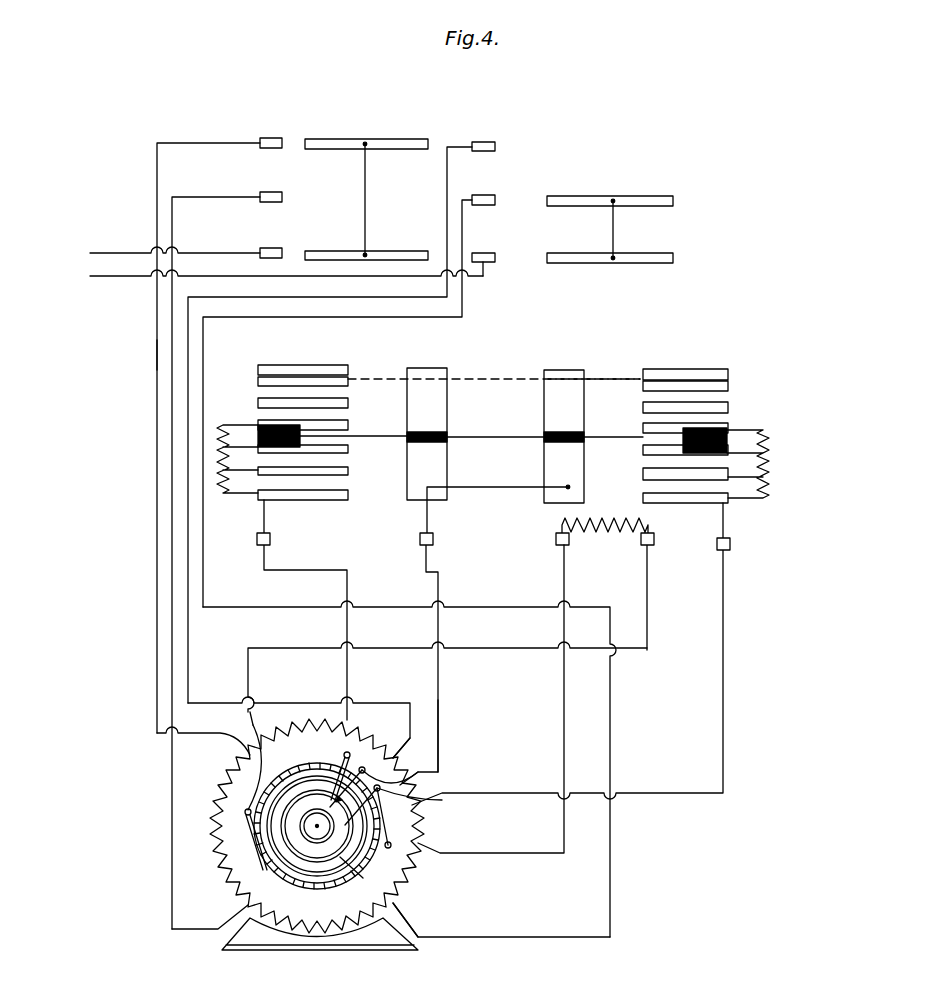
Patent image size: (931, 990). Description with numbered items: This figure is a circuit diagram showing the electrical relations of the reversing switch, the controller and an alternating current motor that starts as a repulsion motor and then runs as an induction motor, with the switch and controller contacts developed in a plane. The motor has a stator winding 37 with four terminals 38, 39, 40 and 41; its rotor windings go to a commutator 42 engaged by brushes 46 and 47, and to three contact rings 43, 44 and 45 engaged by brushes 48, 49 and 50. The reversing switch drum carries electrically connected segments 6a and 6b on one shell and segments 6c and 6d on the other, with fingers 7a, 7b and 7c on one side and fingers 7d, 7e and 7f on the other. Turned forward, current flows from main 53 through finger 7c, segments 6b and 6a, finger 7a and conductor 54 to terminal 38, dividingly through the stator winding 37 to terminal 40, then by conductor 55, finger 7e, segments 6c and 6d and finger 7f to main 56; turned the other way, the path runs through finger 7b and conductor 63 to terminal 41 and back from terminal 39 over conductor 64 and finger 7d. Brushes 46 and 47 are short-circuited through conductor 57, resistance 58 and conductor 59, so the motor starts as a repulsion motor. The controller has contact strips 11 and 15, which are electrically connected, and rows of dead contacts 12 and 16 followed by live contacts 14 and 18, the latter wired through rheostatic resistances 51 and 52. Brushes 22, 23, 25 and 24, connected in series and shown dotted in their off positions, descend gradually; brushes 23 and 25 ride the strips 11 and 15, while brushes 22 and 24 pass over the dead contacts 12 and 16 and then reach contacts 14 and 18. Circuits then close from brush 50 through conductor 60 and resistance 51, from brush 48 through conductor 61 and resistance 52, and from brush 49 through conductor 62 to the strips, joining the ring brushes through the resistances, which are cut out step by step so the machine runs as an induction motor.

The finger 7a is at (282, 142).
The finger 7b is at (282, 196).
The finger 7c is at (282, 252).
The finger 7d is at (495, 146).
The finger 7e is at (495, 199).
The finger 7f is at (490, 253).
The segment 6a is at (375, 139).
The segment 6b is at (375, 251).
The segment 6c is at (655, 196).
The segment 6d is at (665, 253).
The contact strip 11 is at (482, 405).
The contacts 12 is at (348, 376).
The contacts 14 is at (348, 425).
The contact strip 15 is at (625, 392).
The contacts 16 is at (728, 385).
The contacts 18 is at (628, 428).
The brush 22 is at (298, 375).
The brush 23 is at (437, 368).
The brush 24 is at (680, 380).
The brush 25 is at (557, 370).
The stator winding 37 is at (215, 780).
The terminal 38 is at (242, 757).
The terminal 39 is at (390, 757).
The terminal 40 is at (395, 902).
The terminal 41 is at (247, 897).
The commutator 42 is at (305, 885).
The contact ring 43 is at (290, 822).
The contact ring 44 is at (300, 826).
The contact ring 45 is at (283, 852).
The brush 46 is at (270, 790).
The brush 47 is at (364, 875).
The brush 48 is at (420, 830).
The brush 49 is at (427, 782).
The brush 50 is at (329, 770).
The resistance 51 is at (222, 462).
The resistance 52 is at (763, 458).
The main 53 is at (110, 240).
The conductor 54 is at (157, 353).
The conductor 55 is at (206, 555).
The main 56 is at (135, 280).
The conductor 57 is at (302, 655).
The resistance 58 is at (616, 545).
The conductor 59 is at (564, 735).
The conductor 60 is at (409, 757).
The conductor 61 is at (723, 790).
The conductor 62 is at (438, 712).
The conductor 63 is at (168, 617).
The conductor 64 is at (188, 648).